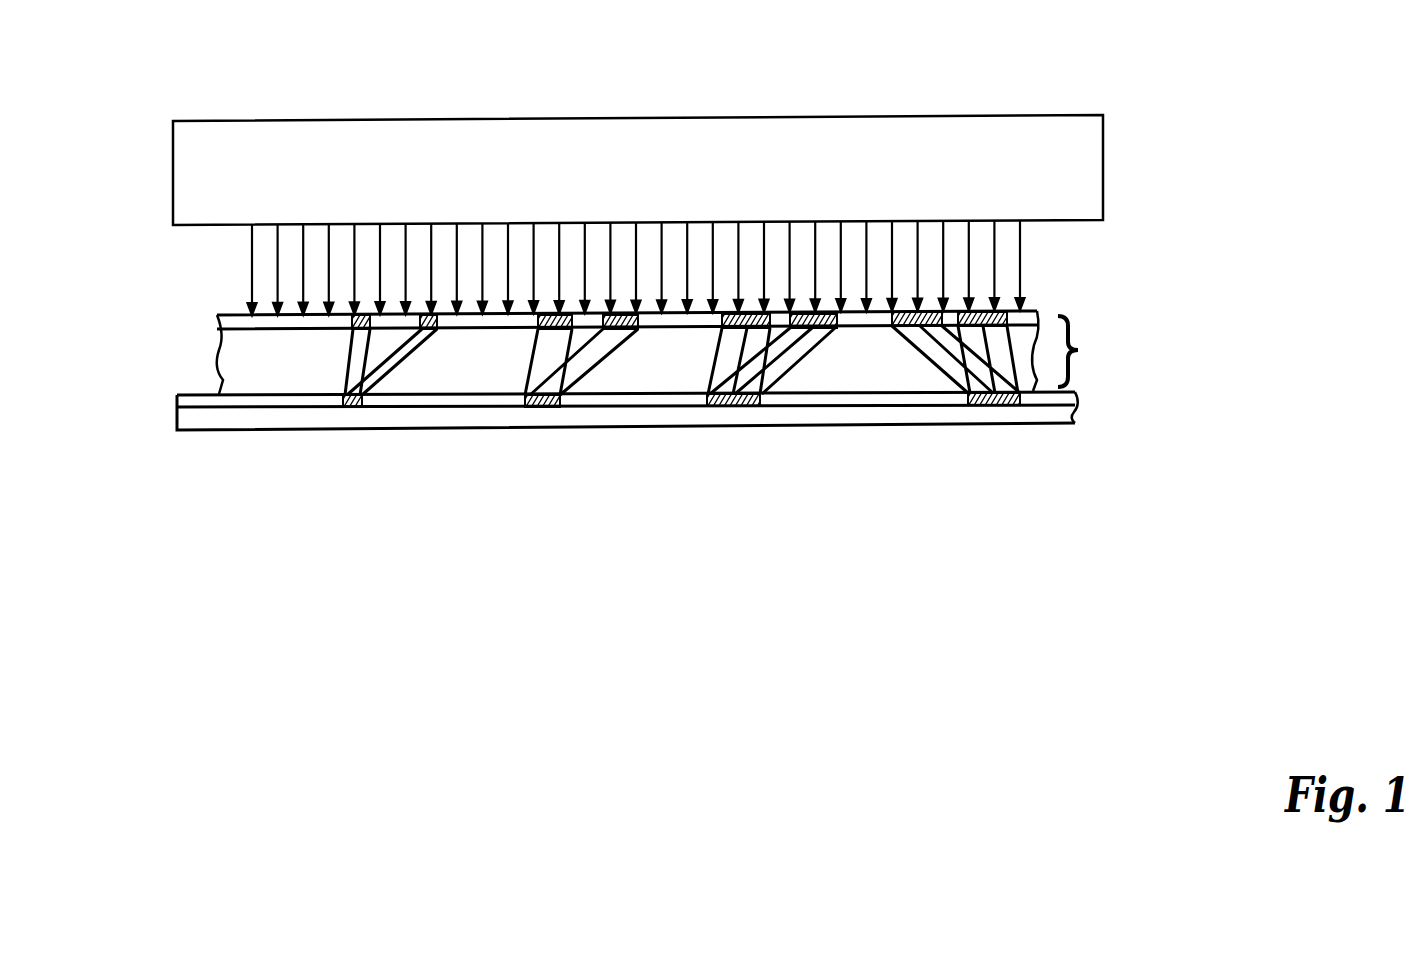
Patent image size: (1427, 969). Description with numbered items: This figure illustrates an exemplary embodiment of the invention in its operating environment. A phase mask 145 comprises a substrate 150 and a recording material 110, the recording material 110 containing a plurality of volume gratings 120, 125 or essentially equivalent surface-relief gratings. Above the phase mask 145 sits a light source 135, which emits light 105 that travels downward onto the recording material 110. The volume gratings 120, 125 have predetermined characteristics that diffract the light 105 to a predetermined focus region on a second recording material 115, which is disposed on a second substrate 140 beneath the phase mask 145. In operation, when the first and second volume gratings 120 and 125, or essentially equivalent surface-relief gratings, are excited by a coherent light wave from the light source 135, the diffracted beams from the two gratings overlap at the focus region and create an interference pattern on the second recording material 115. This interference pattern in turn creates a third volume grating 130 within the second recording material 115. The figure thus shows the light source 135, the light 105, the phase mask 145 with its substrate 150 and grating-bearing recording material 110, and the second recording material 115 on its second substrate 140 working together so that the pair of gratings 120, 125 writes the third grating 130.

The light 105 is at (252, 280).
The recording material 110 is at (217, 315).
The second recording material 115 is at (177, 403).
The first volume grating 120 is at (352, 333).
The second volume grating 125 is at (433, 337).
The third volume grating 130 is at (357, 410).
The light source 135 is at (208, 121).
The second substrate 140 is at (177, 420).
The phase mask 145 is at (1078, 350).
The substrate 150 is at (222, 370).